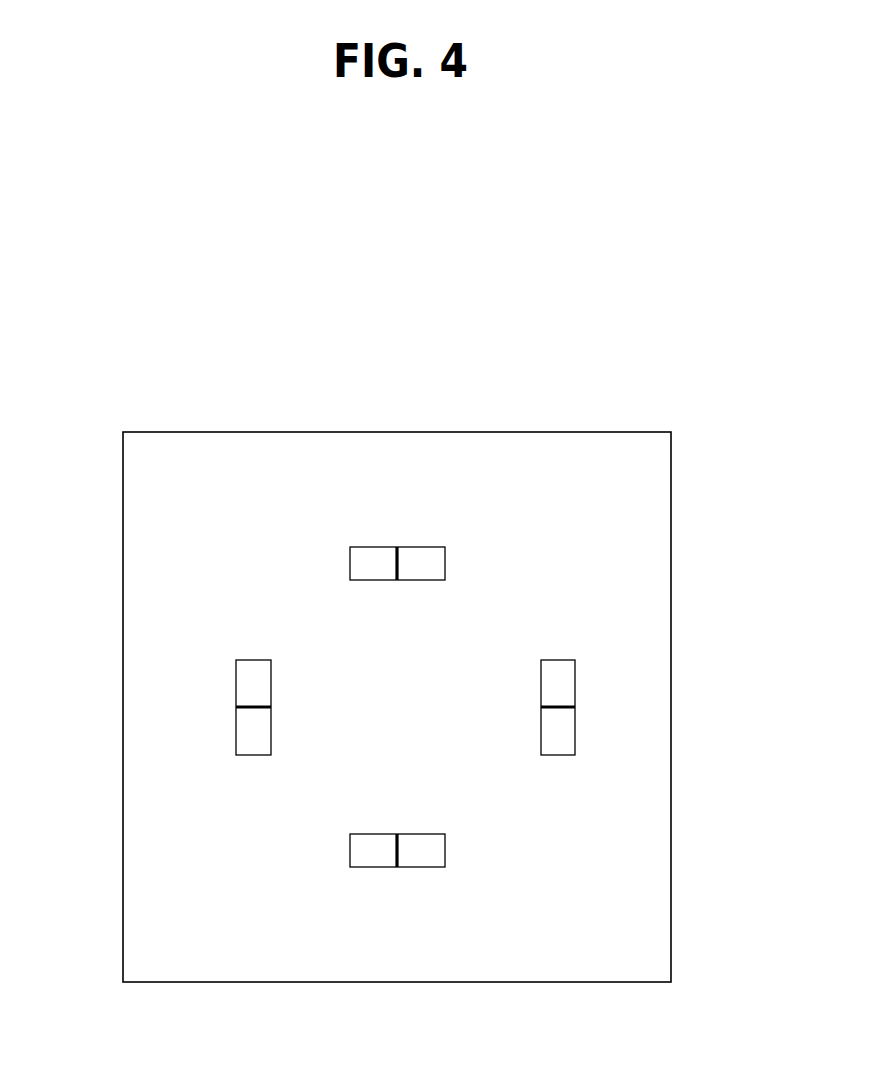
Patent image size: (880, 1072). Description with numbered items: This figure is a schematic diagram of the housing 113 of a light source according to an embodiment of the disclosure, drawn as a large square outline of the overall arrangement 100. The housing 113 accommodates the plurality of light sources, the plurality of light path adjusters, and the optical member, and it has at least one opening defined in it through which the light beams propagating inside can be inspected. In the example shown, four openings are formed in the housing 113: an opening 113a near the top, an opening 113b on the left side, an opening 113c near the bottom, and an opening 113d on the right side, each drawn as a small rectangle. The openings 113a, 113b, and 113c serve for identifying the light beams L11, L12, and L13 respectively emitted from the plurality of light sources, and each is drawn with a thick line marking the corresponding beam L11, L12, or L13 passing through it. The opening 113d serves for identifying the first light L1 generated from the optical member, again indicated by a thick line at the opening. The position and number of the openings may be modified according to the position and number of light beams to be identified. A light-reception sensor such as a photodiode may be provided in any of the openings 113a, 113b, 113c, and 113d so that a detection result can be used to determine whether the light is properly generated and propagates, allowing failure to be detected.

The display device 100 is at (617, 251).
The housing 113 is at (610, 432).
The opening 113a is at (401, 479).
The opening 113b is at (157, 707).
The opening 113c is at (401, 935).
The opening 113d is at (646, 707).
The first light L1 is at (575, 707).
The light beam L11 is at (396, 562).
The light beam L12 is at (236, 707).
The light beam L13 is at (396, 852).